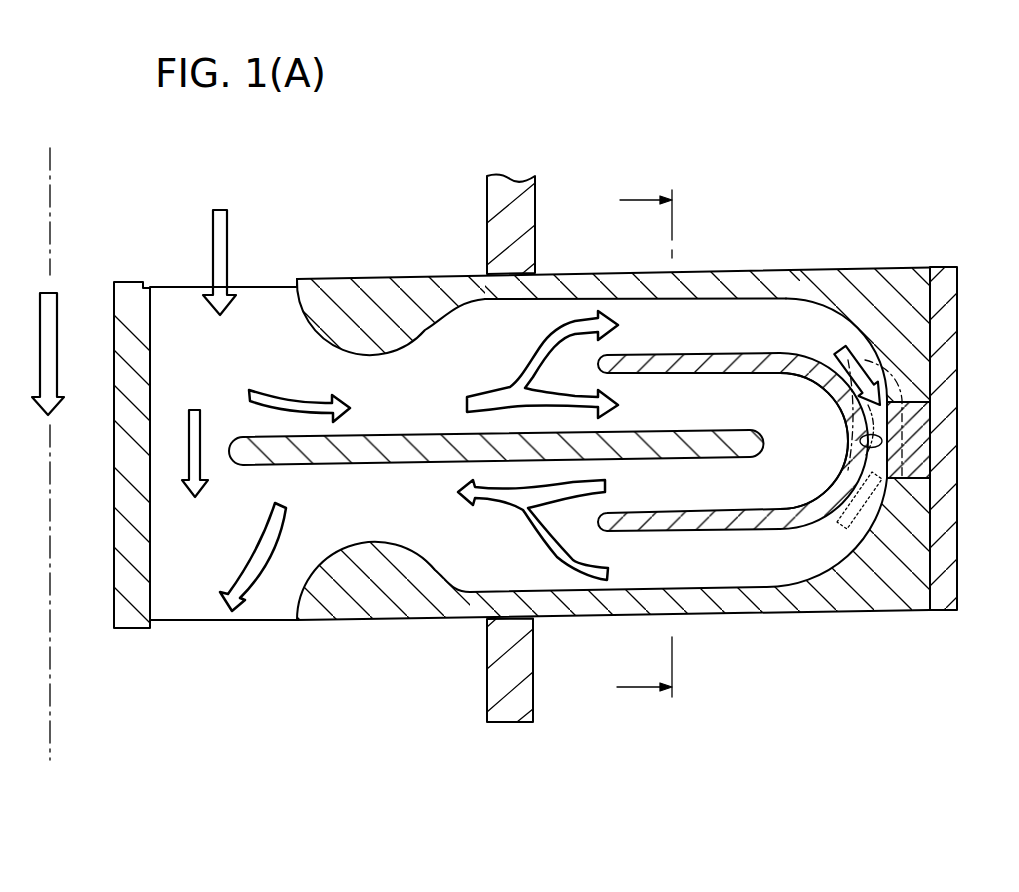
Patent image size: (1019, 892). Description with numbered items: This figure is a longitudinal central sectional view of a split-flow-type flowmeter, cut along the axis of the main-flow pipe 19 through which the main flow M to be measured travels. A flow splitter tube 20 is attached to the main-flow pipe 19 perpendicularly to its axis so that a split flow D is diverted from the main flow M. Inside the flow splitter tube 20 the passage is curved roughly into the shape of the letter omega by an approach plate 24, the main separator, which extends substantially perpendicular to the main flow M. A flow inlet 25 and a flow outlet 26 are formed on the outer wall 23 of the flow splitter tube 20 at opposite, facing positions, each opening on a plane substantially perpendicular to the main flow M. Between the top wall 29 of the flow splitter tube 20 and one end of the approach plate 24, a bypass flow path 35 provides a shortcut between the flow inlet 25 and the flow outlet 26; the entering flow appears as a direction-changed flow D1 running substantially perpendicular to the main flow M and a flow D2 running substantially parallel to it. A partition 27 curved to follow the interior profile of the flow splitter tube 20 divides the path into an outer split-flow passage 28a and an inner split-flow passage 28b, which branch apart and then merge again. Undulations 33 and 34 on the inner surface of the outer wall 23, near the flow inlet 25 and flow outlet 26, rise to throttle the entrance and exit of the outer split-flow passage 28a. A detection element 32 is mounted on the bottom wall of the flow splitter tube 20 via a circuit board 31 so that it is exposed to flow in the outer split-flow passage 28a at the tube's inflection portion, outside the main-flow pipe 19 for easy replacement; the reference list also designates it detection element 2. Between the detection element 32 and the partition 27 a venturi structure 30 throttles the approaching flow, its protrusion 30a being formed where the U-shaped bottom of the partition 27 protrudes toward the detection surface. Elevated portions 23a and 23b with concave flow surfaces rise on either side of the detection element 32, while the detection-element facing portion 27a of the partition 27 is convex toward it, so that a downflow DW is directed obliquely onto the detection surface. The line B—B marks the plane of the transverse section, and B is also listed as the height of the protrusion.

The main-flow pipe 19 is at (515, 710).
The flow splitter tube 20 is at (687, 258).
The outer wall of the flow splitter tube 23 is at (738, 272).
The elevated portion 23a is at (850, 330).
The elevated portion 23b is at (840, 548).
The approach plate (main separator) 24 is at (340, 465).
The flow inlet 25 is at (190, 284).
The flow outlet 26 is at (267, 620).
The partition 27 is at (727, 530).
The detection-element facing portion of the partition 27a is at (850, 433).
The outer split-flow passage 28a is at (700, 344).
The inner split-flow passage 28b is at (700, 418).
The top wall 29 is at (132, 622).
The venturi structure 30 is at (848, 463).
The protrusion 30a is at (860, 439).
The circuit board 31 is at (945, 369).
The detection element 32 is at (937, 433).
The undulation 33 is at (377, 352).
The undulation 34 is at (373, 617).
The bypass flow path 35 is at (163, 453).
The main flow M is at (58, 313).
The split flow D is at (227, 233).
The direction-changed flow D1 is at (302, 381).
The parallel flow D2 is at (189, 427).
The downflow DW is at (840, 350).
The line B— B is at (626, 450).
The detection element 2 is at (1011, 183).